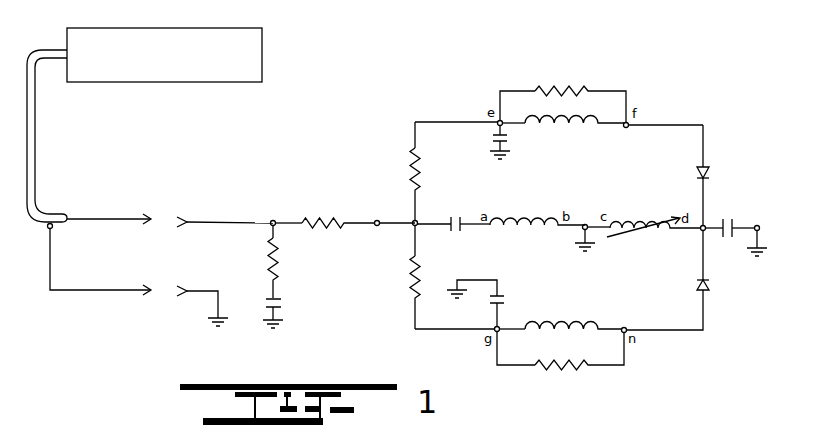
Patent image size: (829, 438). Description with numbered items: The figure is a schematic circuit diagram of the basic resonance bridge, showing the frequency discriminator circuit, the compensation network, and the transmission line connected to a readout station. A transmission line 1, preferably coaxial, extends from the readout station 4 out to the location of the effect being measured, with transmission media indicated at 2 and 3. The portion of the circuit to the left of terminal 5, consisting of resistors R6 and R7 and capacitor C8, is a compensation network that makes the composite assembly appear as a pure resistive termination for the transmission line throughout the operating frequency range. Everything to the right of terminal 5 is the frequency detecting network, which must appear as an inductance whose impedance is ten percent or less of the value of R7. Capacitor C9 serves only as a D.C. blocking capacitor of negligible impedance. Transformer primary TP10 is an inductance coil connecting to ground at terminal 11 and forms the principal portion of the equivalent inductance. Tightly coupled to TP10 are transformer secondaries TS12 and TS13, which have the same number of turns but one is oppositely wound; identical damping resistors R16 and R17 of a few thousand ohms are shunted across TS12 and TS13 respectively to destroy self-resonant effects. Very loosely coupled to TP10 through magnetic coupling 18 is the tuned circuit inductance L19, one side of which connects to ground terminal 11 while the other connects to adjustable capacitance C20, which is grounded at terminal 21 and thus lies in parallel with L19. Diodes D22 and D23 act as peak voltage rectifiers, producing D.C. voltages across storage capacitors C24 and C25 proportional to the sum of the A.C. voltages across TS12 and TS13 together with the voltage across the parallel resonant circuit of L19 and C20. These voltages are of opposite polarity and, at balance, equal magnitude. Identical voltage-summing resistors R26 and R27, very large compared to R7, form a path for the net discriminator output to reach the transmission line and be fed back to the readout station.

The transmission line 1 is at (35, 160).
The transmission medium 2 is at (165, 214).
The transmission medium 3 is at (166, 285).
The readout station 4 is at (262, 33).
The terminal 5 is at (377, 226).
The ground terminal 11 is at (580, 233).
The magnetic coupling 18 is at (608, 211).
The ground terminal 21 is at (759, 224).
The resistor R7 is at (325, 214).
The resistor R6 is at (285, 261).
The capacitor C8 is at (284, 313).
The voltage-summing resistor R26 is at (431, 171).
The voltage-summing resistor R27 is at (430, 277).
The D.C. blocking capacitor C9 is at (453, 214).
The transformer primary TP10 is at (545, 232).
The tuned circuit inductance L19 is at (619, 214).
The adjustable capacitance C20 is at (730, 218).
The diode D22 is at (722, 175).
The diode D23 is at (686, 280).
The transformer secondary TS12 is at (592, 127).
The damping resistor R16 is at (563, 95).
The storage capacitor C24 is at (515, 142).
The transformer secondary TS13 is at (594, 326).
The damping resistor R17 is at (560, 361).
The storage capacitor C25 is at (492, 303).